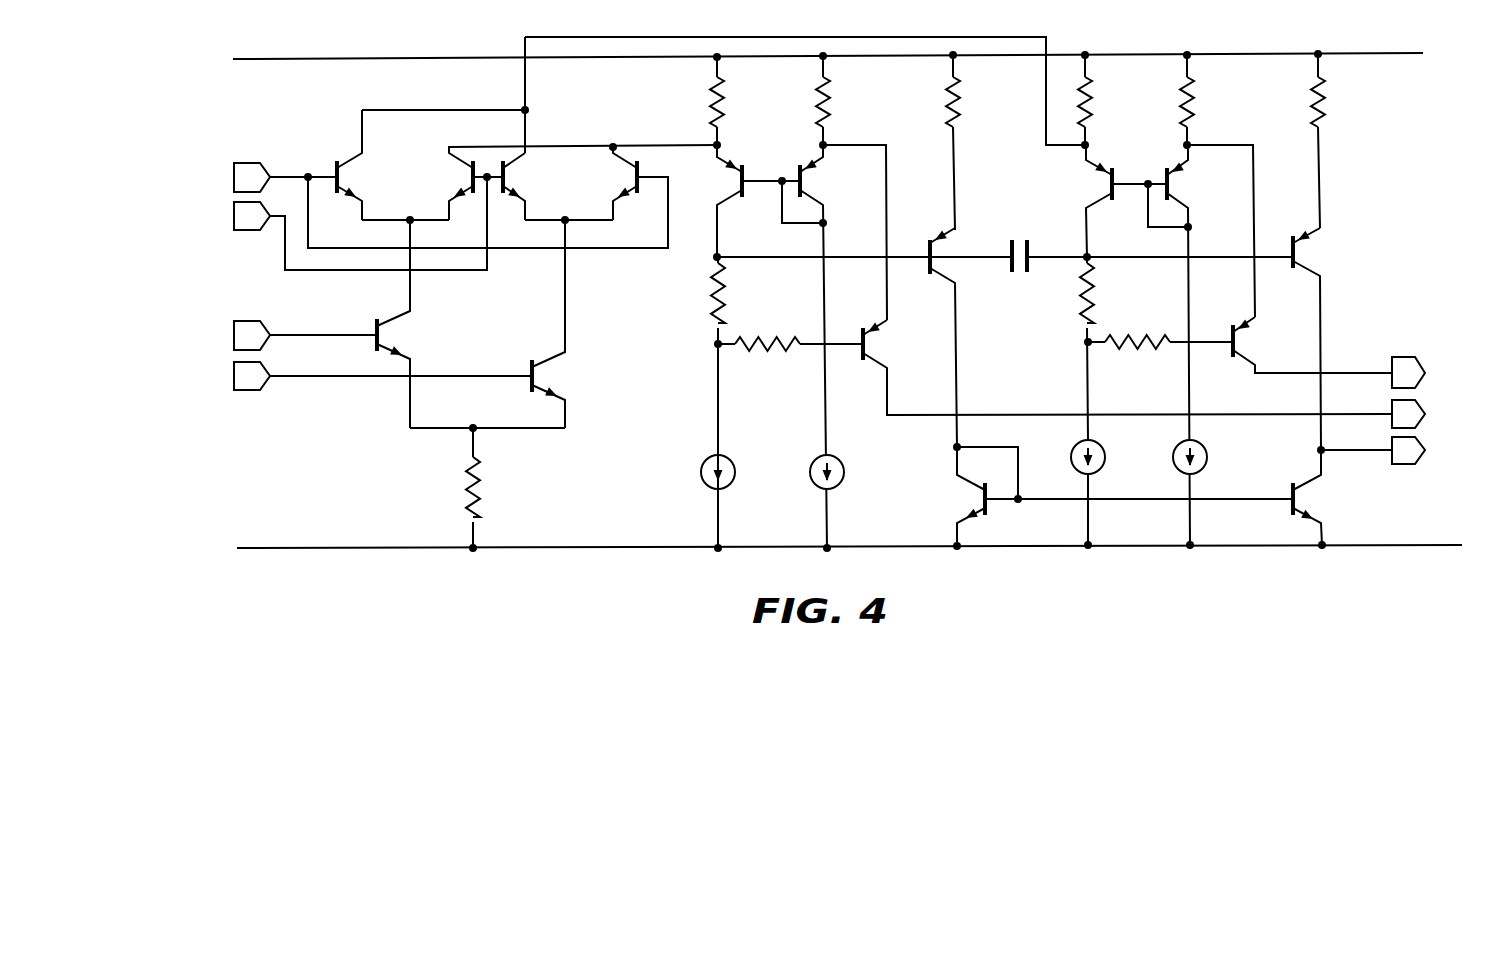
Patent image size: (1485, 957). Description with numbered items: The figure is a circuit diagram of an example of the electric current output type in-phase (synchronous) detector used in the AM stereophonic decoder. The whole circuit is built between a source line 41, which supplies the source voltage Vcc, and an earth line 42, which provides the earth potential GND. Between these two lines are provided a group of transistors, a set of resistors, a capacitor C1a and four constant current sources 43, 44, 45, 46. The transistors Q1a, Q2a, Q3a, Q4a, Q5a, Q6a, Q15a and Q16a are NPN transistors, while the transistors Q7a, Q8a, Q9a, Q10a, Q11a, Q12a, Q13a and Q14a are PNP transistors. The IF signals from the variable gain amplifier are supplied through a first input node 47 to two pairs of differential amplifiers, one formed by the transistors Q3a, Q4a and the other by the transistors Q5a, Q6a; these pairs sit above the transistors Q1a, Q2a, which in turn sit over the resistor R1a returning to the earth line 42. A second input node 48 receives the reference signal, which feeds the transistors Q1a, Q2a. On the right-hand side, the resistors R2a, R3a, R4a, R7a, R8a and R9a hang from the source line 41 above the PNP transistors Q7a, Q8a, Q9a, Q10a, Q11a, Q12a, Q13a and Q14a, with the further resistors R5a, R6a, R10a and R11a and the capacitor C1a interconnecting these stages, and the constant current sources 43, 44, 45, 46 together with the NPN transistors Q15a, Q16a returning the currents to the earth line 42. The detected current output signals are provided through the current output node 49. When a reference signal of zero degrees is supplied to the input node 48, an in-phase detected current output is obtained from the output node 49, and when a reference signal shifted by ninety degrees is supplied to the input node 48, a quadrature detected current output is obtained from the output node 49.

The source line 41 is at (338, 57).
The earth line 42 is at (332, 546).
The constant current source 43 is at (731, 461).
The constant current source 44 is at (838, 461).
The constant current source 45 is at (1106, 464).
The constant current source 46 is at (1208, 464).
The first input node 47 is at (272, 201).
The second input node 48 is at (270, 378).
The current output node 49 is at (1427, 450).
The NPN transistor Q1a is at (405, 335).
The NPN transistor Q2a is at (560, 376).
The NPN transistor Q3a is at (352, 181).
The NPN transistor Q4a is at (450, 164).
The NPN transistor Q5a is at (515, 185).
The NPN transistor Q6a is at (624, 181).
The PNP transistor Q7a is at (815, 184).
The PNP transistor Q8a is at (720, 197).
The PNP transistor Q9a is at (880, 346).
The PNP transistor Q10a is at (955, 266).
The PNP transistor Q11a is at (1183, 193).
The PNP transistor Q12a is at (1090, 185).
The PNP transistor Q13a is at (1248, 346).
The PNP transistor Q14a is at (1316, 254).
The NPN transistor Q15a is at (955, 497).
The NPN transistor Q16a is at (1312, 499).
The resistor R1a is at (494, 489).
The resistor R2a is at (739, 101).
The resistor R3a is at (845, 100).
The resistor R4a is at (974, 141).
The resistor R5a is at (790, 363).
The resistor R6a is at (740, 356).
The resistor R7a is at (1106, 100).
The resistor R8a is at (1217, 184).
The resistor R9a is at (1339, 139).
The resistor R10a is at (1116, 347).
The resistor R11a is at (1160, 361).
The capacitor C1a is at (1147, 237).